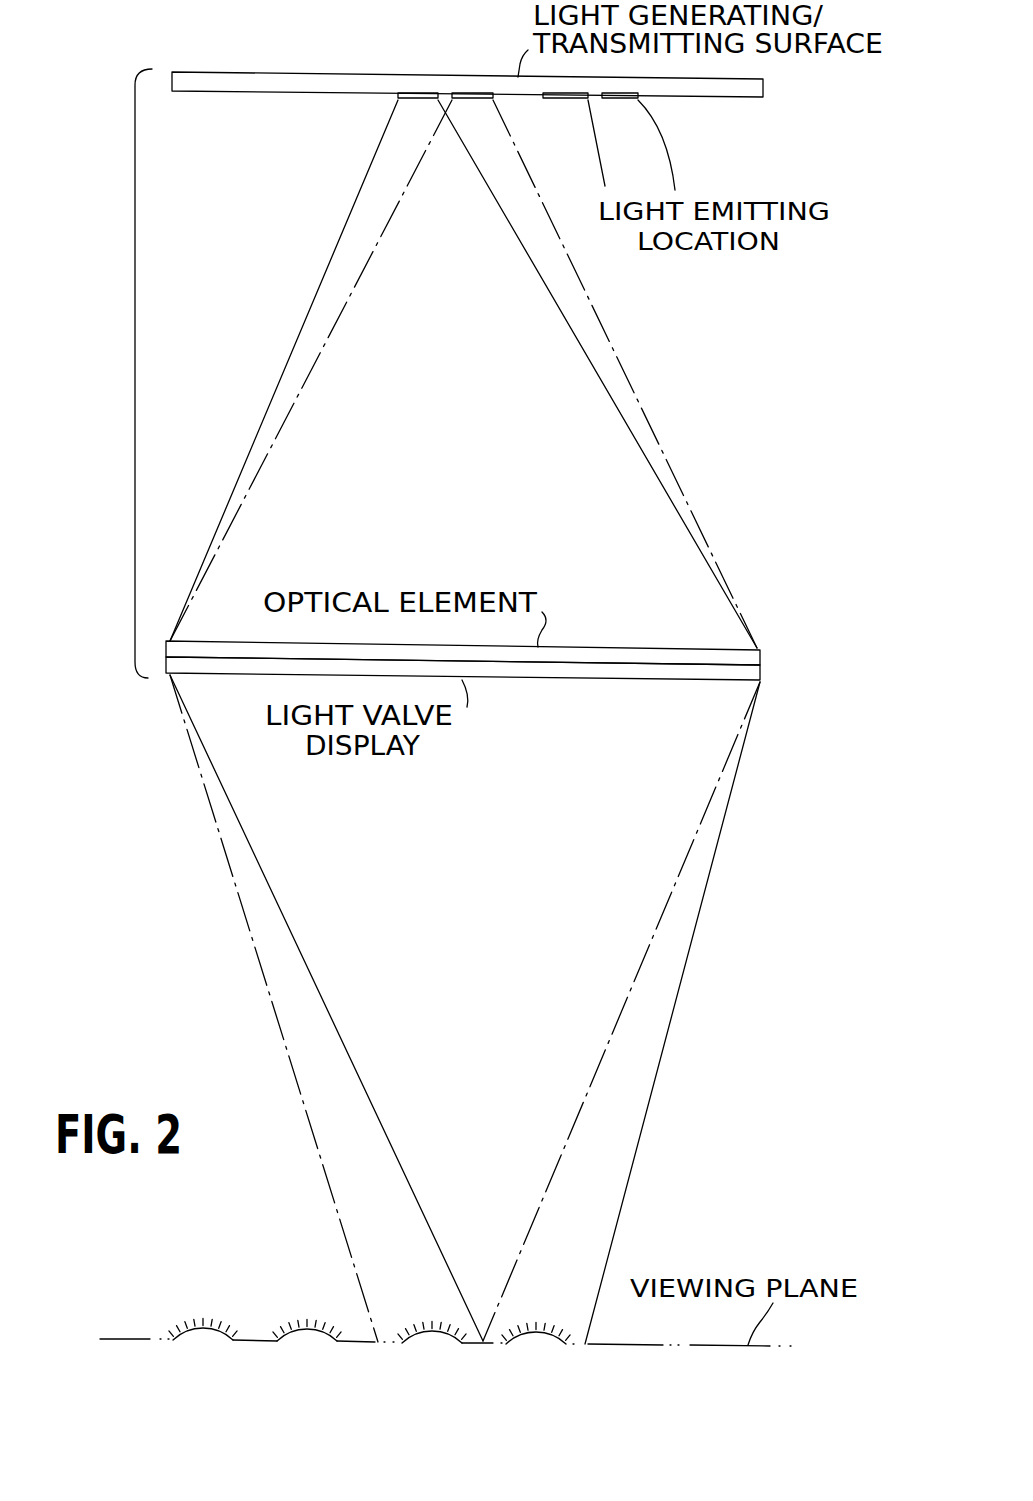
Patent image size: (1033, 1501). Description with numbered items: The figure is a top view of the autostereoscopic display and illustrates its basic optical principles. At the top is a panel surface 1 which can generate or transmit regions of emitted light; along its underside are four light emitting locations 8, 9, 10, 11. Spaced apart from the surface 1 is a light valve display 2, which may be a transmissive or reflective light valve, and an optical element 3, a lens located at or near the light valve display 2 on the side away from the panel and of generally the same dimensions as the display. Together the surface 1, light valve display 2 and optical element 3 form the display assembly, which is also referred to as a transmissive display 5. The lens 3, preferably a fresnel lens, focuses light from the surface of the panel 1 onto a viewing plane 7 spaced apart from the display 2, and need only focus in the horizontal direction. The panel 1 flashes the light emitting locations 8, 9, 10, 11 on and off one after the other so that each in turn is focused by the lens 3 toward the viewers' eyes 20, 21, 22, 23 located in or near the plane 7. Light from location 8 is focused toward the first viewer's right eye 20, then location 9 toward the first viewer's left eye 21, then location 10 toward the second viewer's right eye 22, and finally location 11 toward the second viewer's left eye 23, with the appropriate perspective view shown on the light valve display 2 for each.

The surface 1 is at (722, 97).
The light valve display 2 is at (585, 680).
The optical element 3 is at (663, 650).
The transmissive display 5 is at (133, 365).
The viewing plane 7 is at (722, 1347).
The light emitting location 8 is at (420, 100).
The light emitting location 9 is at (472, 100).
The light emitting location 10 is at (570, 100).
The light emitting location 11 is at (622, 100).
The first viewer's right eye 20 is at (537, 1345).
The first viewer's left eye 21 is at (433, 1345).
The second viewer's right eye 22 is at (307, 1342).
The second viewer's left eye 23 is at (204, 1343).